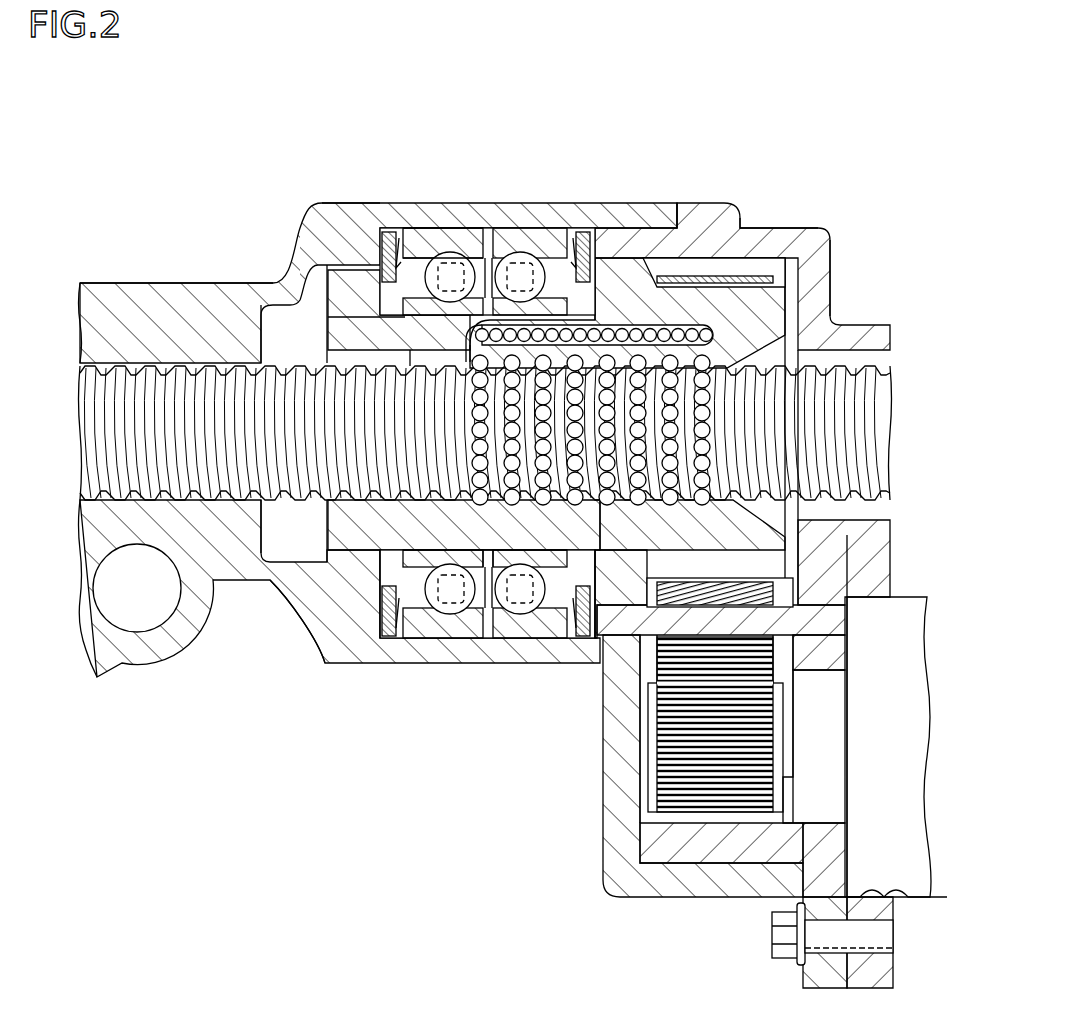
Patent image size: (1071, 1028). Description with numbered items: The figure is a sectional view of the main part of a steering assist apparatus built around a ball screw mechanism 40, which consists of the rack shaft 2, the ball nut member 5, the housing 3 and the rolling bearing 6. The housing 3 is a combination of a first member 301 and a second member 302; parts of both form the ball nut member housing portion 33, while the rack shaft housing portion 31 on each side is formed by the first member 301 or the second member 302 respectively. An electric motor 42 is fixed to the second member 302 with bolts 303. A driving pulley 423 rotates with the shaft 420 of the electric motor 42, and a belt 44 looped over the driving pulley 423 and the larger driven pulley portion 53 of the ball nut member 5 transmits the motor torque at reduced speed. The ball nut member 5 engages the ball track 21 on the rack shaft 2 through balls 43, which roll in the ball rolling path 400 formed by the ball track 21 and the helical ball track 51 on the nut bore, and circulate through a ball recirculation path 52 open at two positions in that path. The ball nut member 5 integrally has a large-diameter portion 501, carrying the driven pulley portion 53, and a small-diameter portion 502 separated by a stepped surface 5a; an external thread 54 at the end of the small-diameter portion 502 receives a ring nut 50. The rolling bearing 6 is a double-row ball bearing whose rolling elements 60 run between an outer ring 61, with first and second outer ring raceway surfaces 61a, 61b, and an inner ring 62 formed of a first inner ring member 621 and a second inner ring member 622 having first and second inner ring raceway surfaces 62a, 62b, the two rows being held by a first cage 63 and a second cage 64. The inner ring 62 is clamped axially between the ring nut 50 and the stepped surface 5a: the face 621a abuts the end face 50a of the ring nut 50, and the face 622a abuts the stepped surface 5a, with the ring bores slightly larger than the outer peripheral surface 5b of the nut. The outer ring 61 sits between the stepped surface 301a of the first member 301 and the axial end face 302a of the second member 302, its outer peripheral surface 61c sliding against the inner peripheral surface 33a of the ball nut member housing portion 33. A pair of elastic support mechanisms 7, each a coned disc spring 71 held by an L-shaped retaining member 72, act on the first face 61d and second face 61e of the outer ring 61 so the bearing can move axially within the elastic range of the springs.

The rack shaft 2 is at (113, 360).
The ball track 21 is at (877, 400).
The housing 3 is at (836, 232).
The rack shaft housing portion 31 is at (150, 300).
The first member 301 is at (220, 290).
The stepped surface 301a is at (362, 205).
The second member 302 is at (710, 226).
The axial end face 302a is at (561, 221).
The bolts 303 is at (770, 958).
The ball screw mechanism 40 is at (306, 318).
The ball rolling path 400 is at (673, 520).
The electric motor 42 is at (908, 597).
The shaft 420 is at (817, 757).
The driving pulley 423 is at (655, 780).
The balls 43 is at (700, 442).
The belt 44 is at (723, 277).
The ball nut member 5 is at (675, 390).
The stepped surface 5a is at (645, 326).
The outer peripheral surface 5b is at (466, 350).
The ring nut 50 is at (327, 563).
The end face 50a is at (416, 568).
The large-diameter portion 501 is at (662, 228).
The small-diameter portion 502 is at (305, 317).
The ball track 51 is at (694, 506).
The ball recirculation path 52 is at (645, 334).
The driven pulley portion 53 is at (757, 282).
The external thread 54 is at (337, 566).
The rolling bearing 6 is at (487, 196).
The rolling elements 60 is at (448, 228).
The outer ring 61 is at (475, 634).
The first outer ring raceway surface 61a is at (467, 625).
The second outer ring raceway surface 61b is at (517, 618).
The outer peripheral surface 61c is at (490, 640).
The first face 61d is at (400, 645).
The second face 61e is at (577, 640).
The inner ring 62 is at (485, 170).
The first inner ring member 621 is at (478, 262).
The face 621a is at (388, 562).
The second inner ring member 622 is at (520, 262).
The face 622a is at (662, 508).
The first inner ring raceway surface 62a is at (448, 616).
The second inner ring raceway surface 62b is at (528, 615).
The first cage 63 is at (483, 552).
The second cage 64 is at (495, 565).
The elastic support mechanism 7 is at (488, 166).
The coned disc spring 71 is at (397, 245).
The retaining member 72 is at (385, 235).
The ball nut member housing portion 33 is at (445, 227).
The inner peripheral surface 33a is at (440, 227).